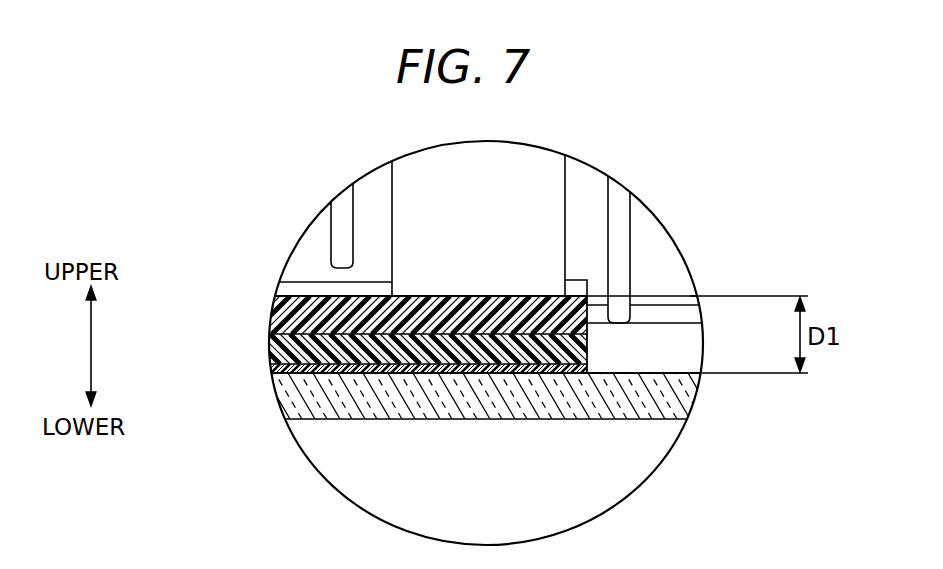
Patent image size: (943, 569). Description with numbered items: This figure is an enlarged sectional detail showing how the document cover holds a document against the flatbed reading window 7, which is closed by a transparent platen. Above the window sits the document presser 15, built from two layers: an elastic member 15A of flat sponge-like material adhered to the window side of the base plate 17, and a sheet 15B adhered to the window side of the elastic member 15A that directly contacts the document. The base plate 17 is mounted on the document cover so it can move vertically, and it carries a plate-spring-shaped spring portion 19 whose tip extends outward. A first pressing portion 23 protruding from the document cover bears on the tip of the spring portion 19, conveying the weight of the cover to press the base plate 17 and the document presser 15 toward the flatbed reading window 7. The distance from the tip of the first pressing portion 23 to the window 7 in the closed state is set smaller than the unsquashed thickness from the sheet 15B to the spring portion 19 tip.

The flatbed reading window 7 is at (275, 392).
The document presser 15 is at (494, 355).
The elastic member 15A is at (586, 343).
The sheet 15B is at (568, 372).
The base plate 17 is at (578, 292).
The spring portion 19 is at (587, 300).
The first pressing portion 23 is at (430, 187).